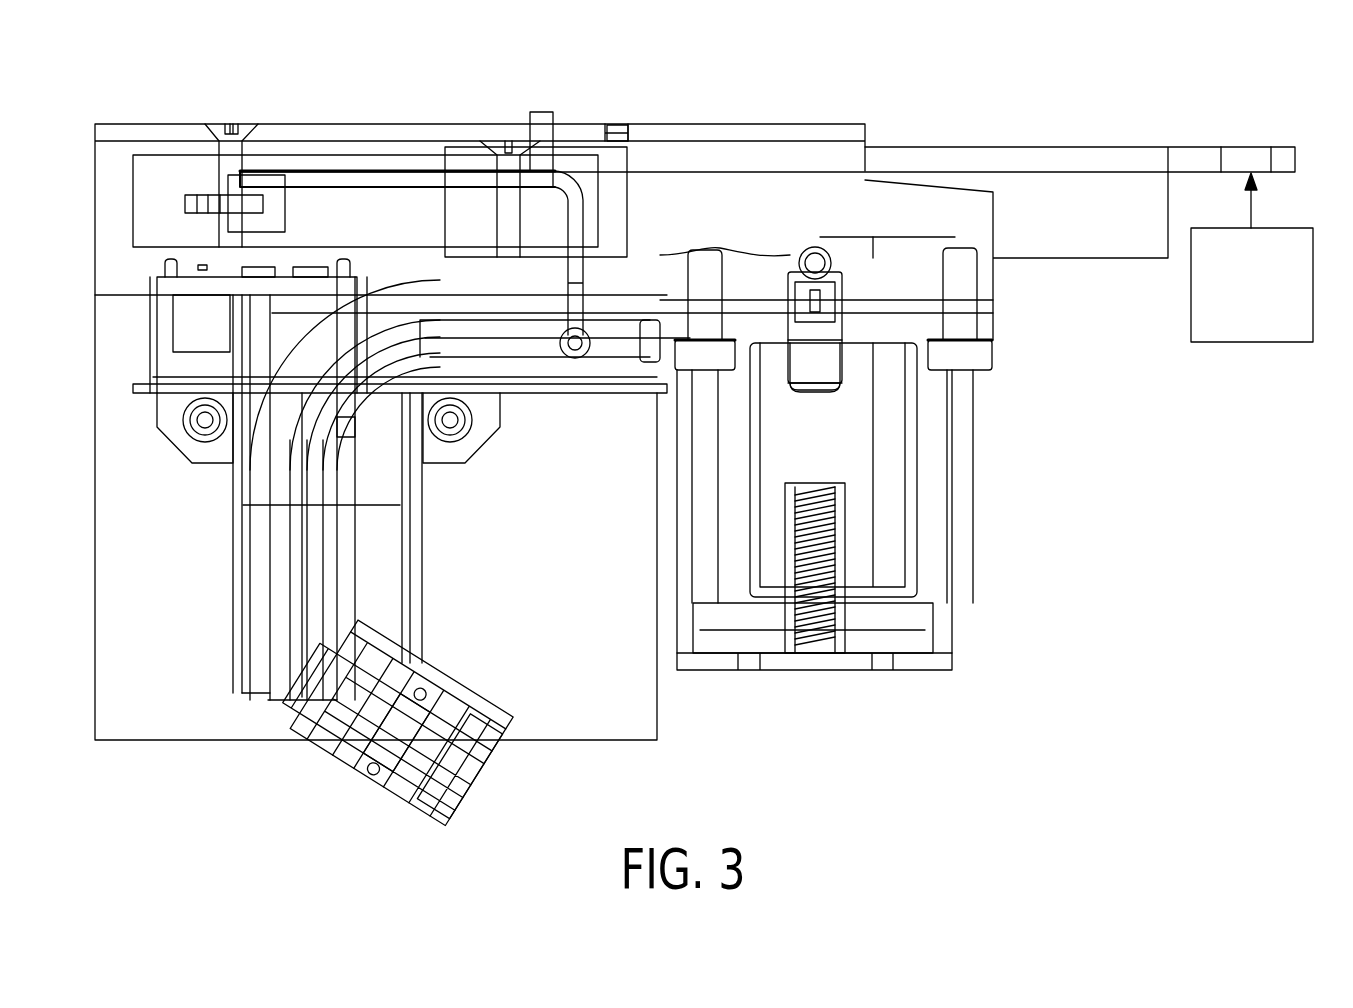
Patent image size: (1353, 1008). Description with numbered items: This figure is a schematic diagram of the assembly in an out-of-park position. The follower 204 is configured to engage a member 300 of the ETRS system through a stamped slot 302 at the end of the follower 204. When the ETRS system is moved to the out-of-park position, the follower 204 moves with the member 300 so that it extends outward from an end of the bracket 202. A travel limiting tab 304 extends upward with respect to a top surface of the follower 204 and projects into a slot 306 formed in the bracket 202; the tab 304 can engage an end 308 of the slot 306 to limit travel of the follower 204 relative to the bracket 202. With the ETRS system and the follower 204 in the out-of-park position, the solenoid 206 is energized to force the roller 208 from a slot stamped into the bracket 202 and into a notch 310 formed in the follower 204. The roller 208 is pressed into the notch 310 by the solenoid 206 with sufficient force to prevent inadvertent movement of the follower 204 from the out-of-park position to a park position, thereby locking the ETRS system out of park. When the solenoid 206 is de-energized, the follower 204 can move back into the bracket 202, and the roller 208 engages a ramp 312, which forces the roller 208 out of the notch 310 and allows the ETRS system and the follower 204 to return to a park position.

The bracket 202 is at (690, 136).
The follower 204 is at (978, 144).
The solenoid 206 is at (903, 544).
The roller 208 is at (815, 256).
The member of the ETRS system 300 is at (1250, 343).
The stamped slot 302 is at (1247, 147).
The travel limiting tab 304 is at (542, 118).
The slot 306 is at (362, 134).
The end of the slot 308 is at (622, 130).
The notch 310 is at (871, 252).
The ramp 312 is at (884, 245).